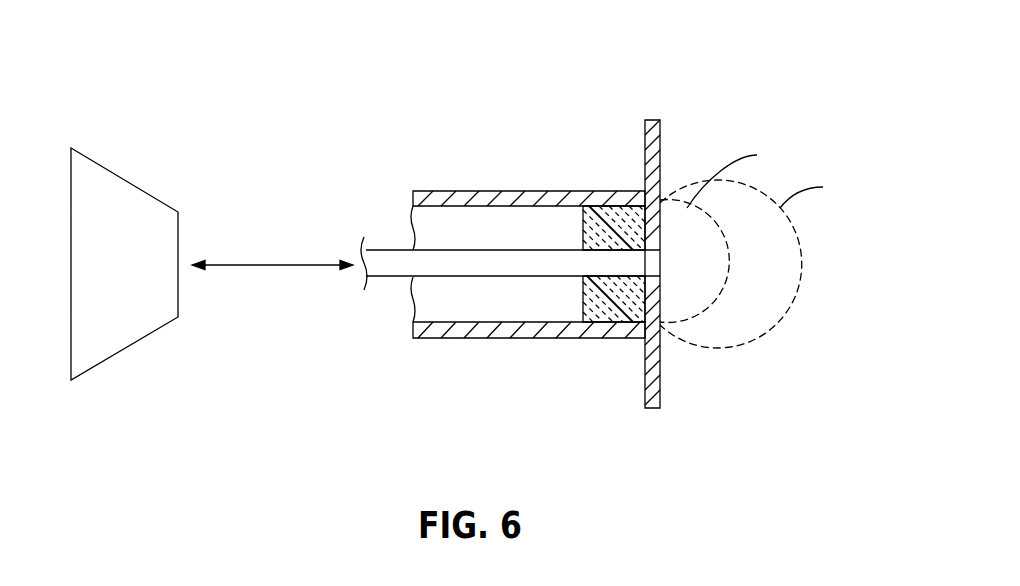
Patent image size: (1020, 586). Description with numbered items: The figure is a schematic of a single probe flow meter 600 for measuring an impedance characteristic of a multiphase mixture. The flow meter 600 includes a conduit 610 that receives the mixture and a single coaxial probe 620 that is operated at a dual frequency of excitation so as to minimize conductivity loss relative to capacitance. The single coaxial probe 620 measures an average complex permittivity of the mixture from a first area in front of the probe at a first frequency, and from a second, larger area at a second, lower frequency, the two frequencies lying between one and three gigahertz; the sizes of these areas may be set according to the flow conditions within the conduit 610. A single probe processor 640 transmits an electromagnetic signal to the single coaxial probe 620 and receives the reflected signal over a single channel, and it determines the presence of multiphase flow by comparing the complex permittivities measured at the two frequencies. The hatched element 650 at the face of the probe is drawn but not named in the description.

The single probe flow meter 600 is at (602, 215).
The conduit 610 is at (465, 191).
The single coaxial probe 620 is at (470, 307).
The single probe processor 640 is at (135, 185).
The transducer element 650 is at (624, 214).